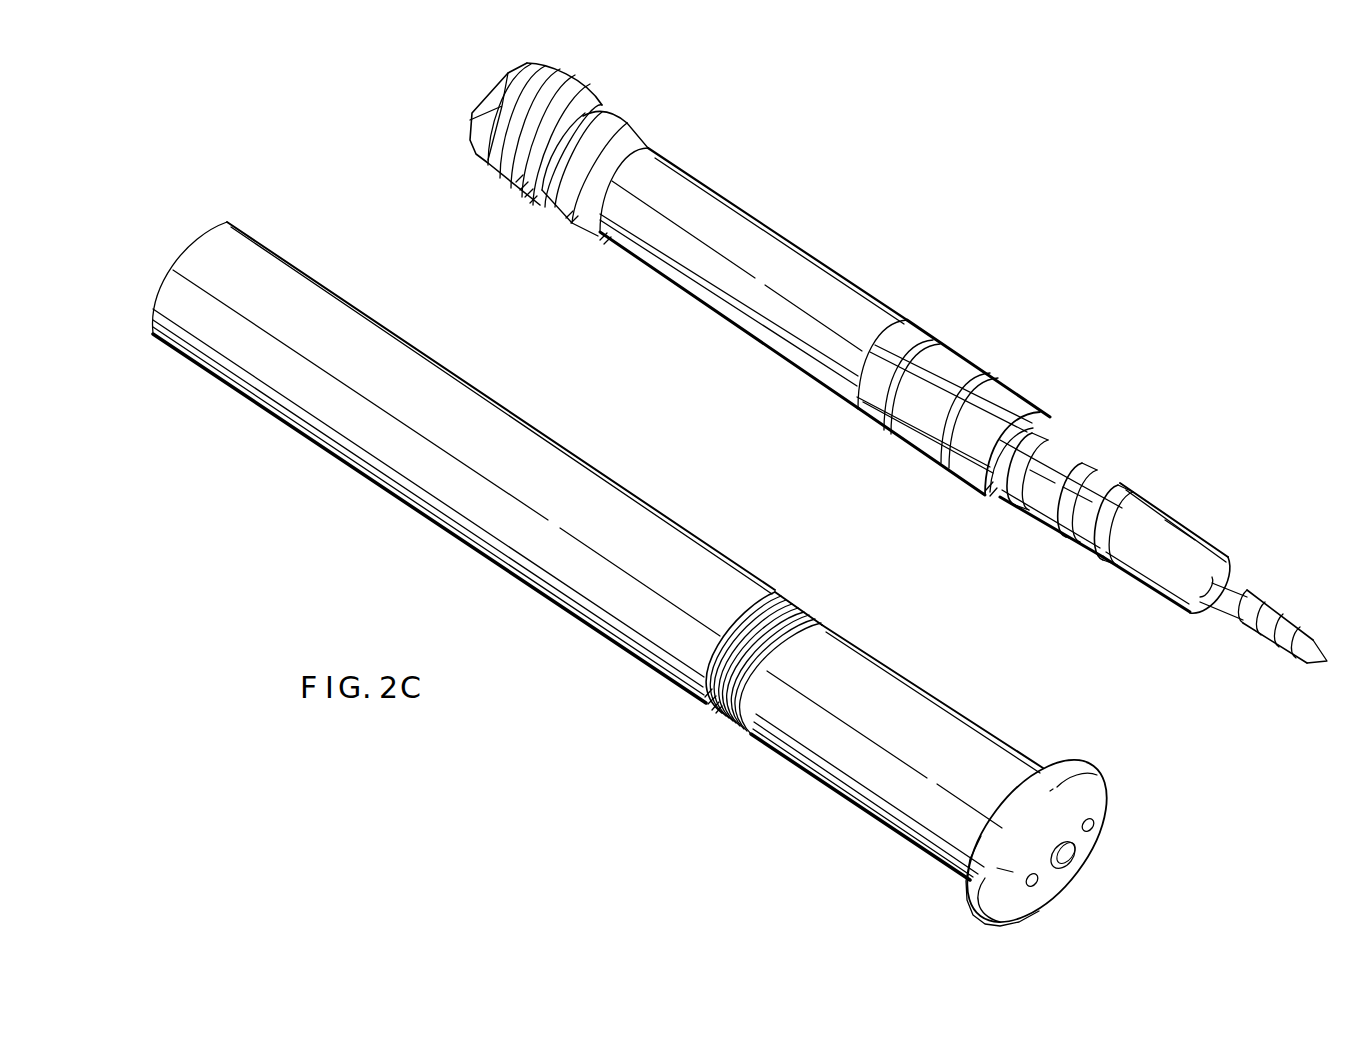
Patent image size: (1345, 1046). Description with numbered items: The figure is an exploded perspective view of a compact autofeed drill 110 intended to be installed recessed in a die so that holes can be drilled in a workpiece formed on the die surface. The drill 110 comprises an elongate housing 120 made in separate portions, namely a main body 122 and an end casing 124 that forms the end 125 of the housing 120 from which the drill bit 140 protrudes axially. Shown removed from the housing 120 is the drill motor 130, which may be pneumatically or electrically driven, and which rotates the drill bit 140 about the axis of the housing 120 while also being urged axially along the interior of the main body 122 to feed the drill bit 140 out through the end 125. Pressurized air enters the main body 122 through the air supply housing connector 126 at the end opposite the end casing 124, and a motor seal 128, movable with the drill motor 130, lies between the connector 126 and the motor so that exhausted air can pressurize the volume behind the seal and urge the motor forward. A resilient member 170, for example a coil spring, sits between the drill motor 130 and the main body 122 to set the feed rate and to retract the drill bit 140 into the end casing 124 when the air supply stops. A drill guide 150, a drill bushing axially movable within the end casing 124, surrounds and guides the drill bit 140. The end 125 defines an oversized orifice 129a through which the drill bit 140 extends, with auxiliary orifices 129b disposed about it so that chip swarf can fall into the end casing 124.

The autofeed drill 110 is at (1008, 178).
The housing 120 is at (762, 741).
The main body 122 is at (730, 560).
The end casing 124 is at (928, 697).
The end 125 is at (1082, 886).
The air supply housing connector 126 is at (567, 73).
The motor seal 128 is at (627, 120).
The orifice 129a is at (1075, 850).
The auxiliary orifices 129b is at (1090, 818).
The drill motor 130 is at (815, 243).
The drill bit 140 is at (1313, 668).
The drill guide 150 is at (1194, 524).
The resilient member 170 is at (1060, 535).